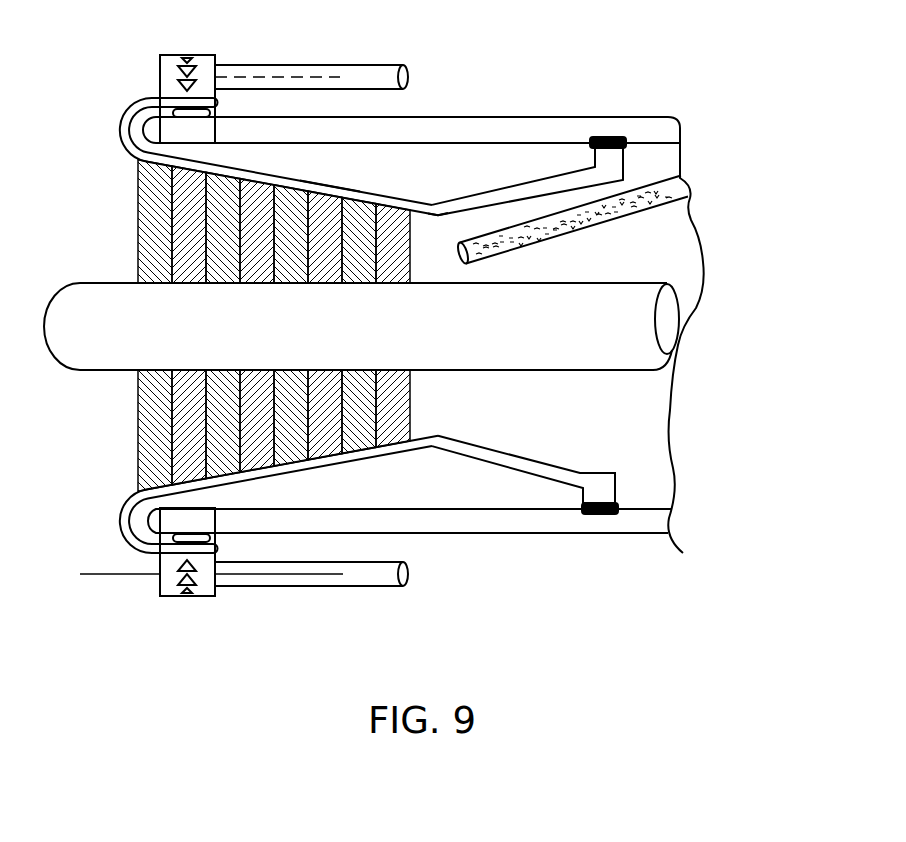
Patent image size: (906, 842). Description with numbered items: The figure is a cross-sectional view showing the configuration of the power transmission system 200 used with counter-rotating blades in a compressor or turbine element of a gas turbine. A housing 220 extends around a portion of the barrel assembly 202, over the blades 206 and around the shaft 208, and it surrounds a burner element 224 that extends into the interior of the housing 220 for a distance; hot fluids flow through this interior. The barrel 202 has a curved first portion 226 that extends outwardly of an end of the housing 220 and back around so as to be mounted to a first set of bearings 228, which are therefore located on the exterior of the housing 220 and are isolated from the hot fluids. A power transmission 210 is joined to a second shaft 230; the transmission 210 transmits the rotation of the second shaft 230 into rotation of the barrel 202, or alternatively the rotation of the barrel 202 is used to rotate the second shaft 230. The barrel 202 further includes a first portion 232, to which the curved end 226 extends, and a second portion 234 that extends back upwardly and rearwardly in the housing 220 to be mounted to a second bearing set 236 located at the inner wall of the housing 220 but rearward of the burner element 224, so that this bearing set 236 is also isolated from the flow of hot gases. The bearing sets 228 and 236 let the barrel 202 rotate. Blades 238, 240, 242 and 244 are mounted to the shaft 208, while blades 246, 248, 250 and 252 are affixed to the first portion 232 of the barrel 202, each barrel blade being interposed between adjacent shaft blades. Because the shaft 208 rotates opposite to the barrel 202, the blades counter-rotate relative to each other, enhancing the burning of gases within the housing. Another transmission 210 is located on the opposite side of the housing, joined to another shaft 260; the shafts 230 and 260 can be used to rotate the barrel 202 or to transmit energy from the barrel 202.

The power transmission system 200 is at (688, 99).
The barrel assembly 202 is at (474, 206).
The blades 206 is at (255, 215).
The shaft 208 is at (578, 285).
The power transmission 210 is at (208, 52).
The housing 220 is at (497, 117).
The burner element 224 is at (693, 205).
The first portion (curved end) of barrel 226 is at (121, 117).
The first set of bearings 228 is at (213, 113).
The second shaft 230 is at (327, 65).
The first portion of barrel 232 is at (330, 188).
The second portion of barrel 234 is at (446, 219).
The second bearing set 236 is at (607, 137).
The blade 238 is at (193, 476).
The blade 240 is at (265, 465).
The blade 242 is at (343, 458).
The blade 244 is at (395, 423).
The blade 246 is at (273, 436).
The blade 248 is at (227, 185).
The blade 250 is at (288, 195).
The blade 252 is at (372, 206).
The shaft 260 is at (320, 563).